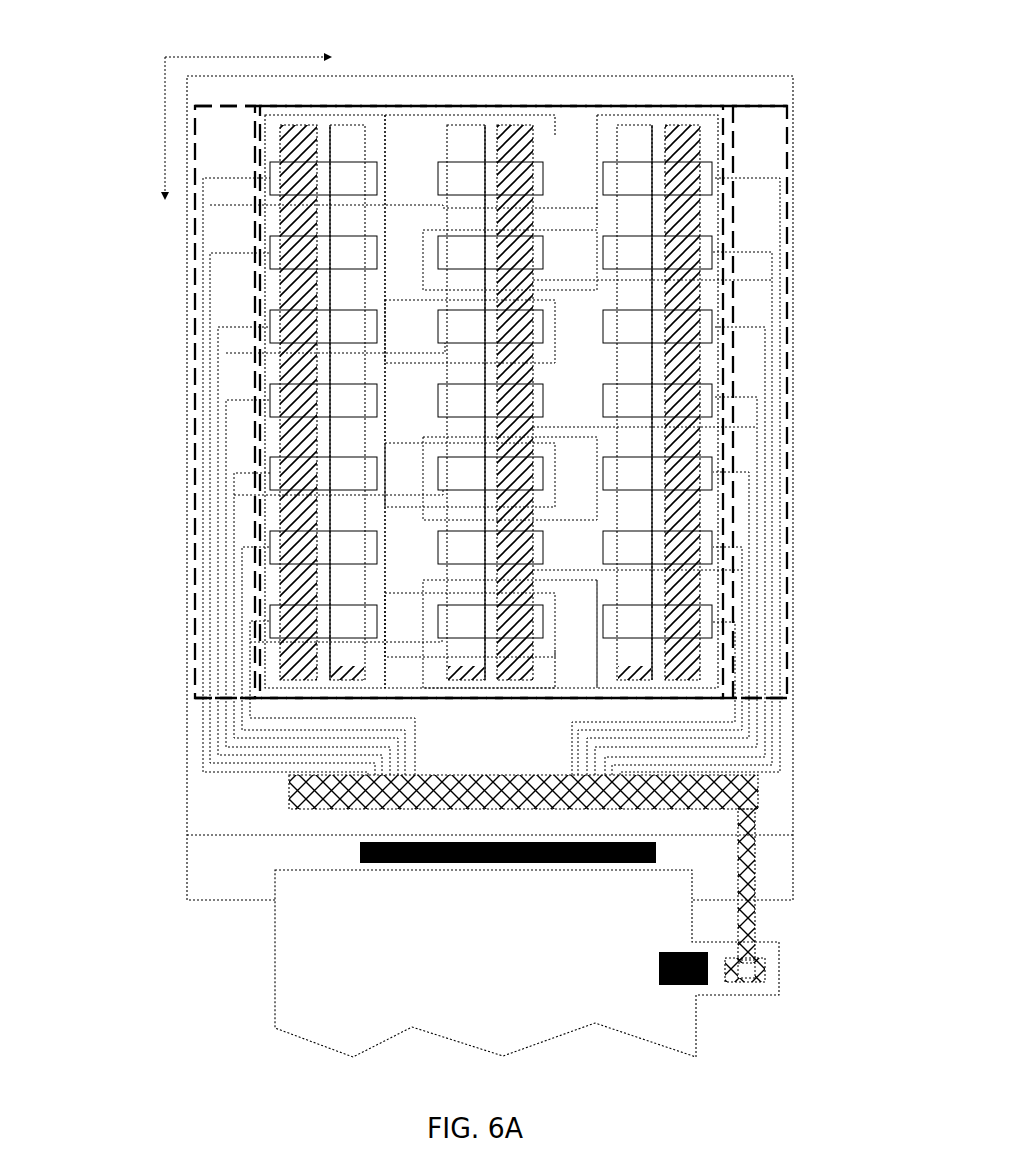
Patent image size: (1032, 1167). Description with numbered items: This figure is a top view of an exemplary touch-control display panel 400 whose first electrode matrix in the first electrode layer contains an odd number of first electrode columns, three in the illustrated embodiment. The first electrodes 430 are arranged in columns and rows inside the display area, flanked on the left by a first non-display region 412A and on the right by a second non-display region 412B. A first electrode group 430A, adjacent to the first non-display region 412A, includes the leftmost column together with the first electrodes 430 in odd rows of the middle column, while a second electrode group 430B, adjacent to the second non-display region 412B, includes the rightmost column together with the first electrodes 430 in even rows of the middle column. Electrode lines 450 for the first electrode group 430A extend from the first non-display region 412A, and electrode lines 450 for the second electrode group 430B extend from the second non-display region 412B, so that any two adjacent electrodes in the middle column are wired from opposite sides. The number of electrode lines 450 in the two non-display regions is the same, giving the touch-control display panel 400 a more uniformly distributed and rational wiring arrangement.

The touch-control display panel 400 is at (217, 29).
The first non-display region 412A is at (210, 147).
The second non-display region 412B is at (753, 150).
The first electrode group 430A is at (358, 115).
The first electrodes 430 is at (540, 190).
The second electrode group 430B is at (663, 112).
The electrode lines 450 is at (202, 272).